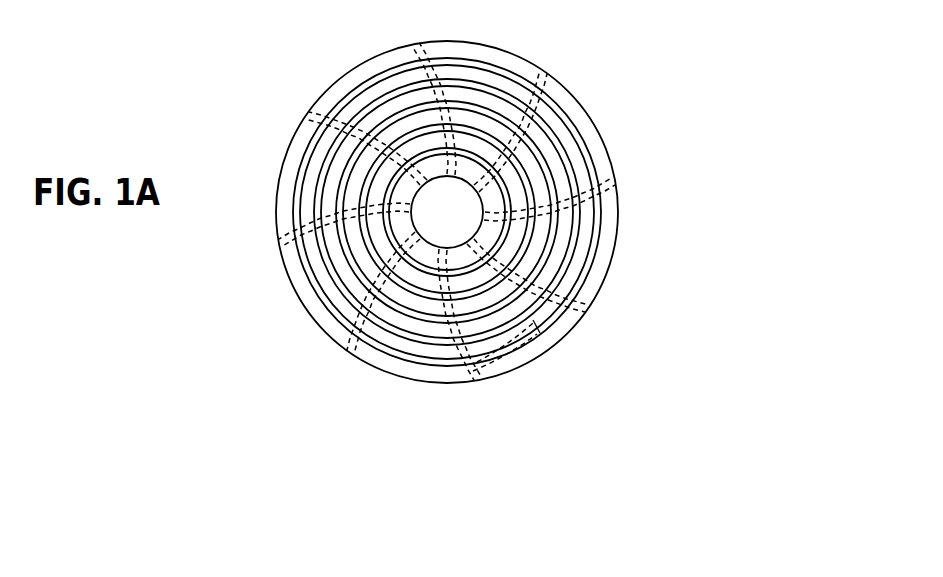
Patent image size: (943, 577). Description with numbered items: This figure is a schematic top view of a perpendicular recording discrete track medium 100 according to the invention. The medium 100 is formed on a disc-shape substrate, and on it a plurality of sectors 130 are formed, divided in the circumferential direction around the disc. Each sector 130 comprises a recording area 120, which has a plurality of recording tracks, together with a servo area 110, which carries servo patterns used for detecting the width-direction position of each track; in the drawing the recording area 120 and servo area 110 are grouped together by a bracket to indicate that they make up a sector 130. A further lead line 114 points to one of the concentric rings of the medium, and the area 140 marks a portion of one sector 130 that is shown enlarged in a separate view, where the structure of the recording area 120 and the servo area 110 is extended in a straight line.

The perpendicular recording discrete track medium 100 is at (526, 44).
The servo area 110 is at (612, 170).
The recording area 120 is at (592, 114).
The sector 130 is at (537, 212).
The annular channel 114 is at (600, 215).
The area 140 is at (517, 357).